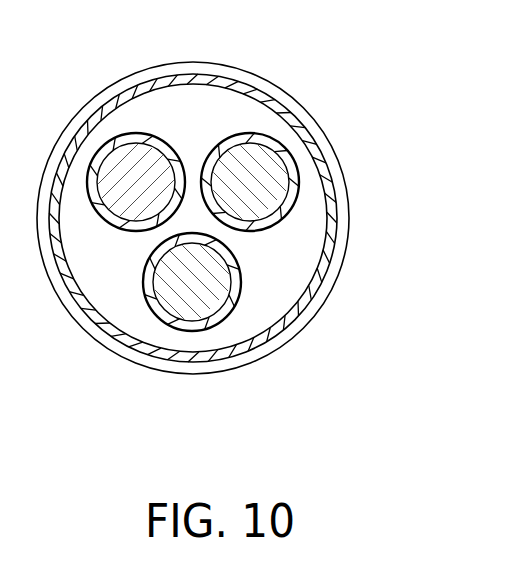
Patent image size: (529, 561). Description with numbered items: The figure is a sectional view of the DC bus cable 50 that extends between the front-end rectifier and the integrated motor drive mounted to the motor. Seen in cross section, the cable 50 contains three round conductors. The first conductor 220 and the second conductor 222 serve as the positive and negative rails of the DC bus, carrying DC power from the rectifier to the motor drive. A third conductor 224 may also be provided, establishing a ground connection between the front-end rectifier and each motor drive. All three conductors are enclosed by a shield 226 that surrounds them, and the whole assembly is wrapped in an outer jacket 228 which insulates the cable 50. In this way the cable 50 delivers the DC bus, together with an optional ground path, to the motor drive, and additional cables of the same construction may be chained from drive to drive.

The DC bus cable 50 is at (370, 107).
The first conductor 220 is at (145, 153).
The second conductor 222 is at (236, 175).
The third conductor 224 is at (215, 293).
The shield 226 is at (328, 250).
The outer jacket 228 is at (328, 295).